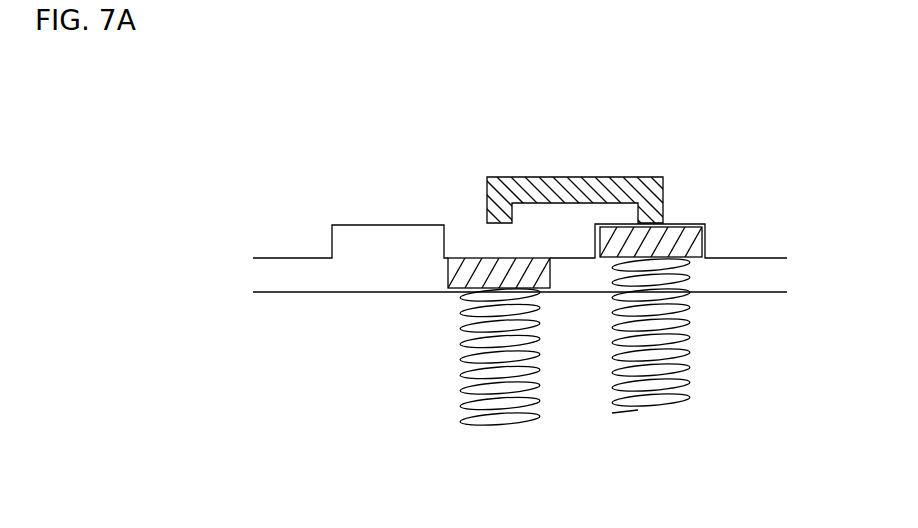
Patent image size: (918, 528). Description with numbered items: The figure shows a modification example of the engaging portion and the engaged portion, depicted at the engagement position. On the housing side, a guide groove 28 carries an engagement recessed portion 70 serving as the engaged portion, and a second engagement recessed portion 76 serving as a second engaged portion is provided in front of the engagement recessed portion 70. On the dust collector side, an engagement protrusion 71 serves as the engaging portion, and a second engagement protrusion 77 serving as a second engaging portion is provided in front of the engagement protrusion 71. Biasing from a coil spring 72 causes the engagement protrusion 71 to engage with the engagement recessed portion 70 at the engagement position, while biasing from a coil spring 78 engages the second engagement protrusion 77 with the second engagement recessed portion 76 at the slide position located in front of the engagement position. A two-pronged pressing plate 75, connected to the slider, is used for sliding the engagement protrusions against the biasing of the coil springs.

The guide groove 28 is at (763, 275).
The engagement recessed portion 70 is at (707, 238).
The engagement protrusion 71 is at (685, 238).
The coil spring 72 is at (660, 388).
The two-pronged pressing plate 75 is at (583, 187).
The second engagement recessed portion 76 is at (408, 224).
The second engagement protrusion 77 is at (462, 272).
The coil spring 78 is at (518, 398).